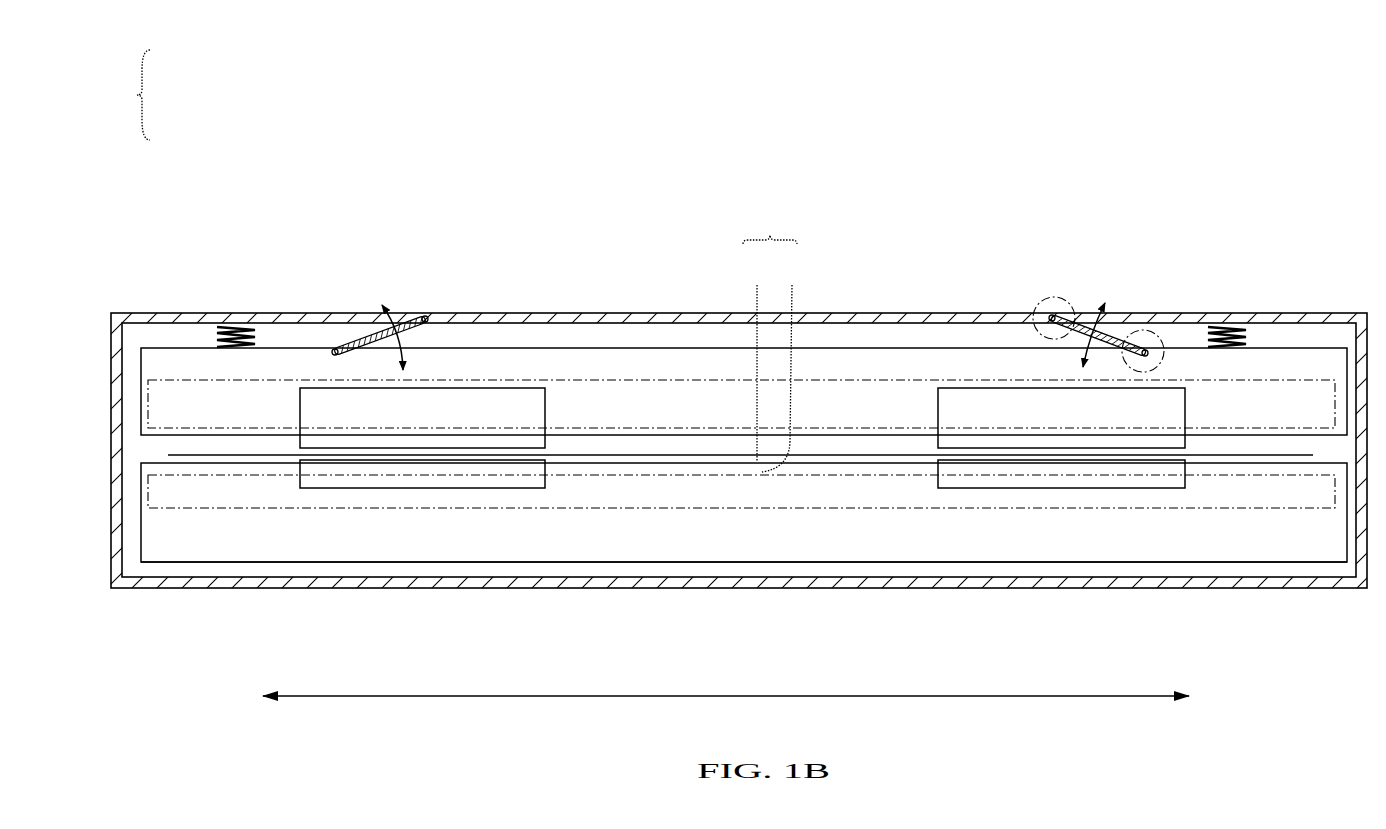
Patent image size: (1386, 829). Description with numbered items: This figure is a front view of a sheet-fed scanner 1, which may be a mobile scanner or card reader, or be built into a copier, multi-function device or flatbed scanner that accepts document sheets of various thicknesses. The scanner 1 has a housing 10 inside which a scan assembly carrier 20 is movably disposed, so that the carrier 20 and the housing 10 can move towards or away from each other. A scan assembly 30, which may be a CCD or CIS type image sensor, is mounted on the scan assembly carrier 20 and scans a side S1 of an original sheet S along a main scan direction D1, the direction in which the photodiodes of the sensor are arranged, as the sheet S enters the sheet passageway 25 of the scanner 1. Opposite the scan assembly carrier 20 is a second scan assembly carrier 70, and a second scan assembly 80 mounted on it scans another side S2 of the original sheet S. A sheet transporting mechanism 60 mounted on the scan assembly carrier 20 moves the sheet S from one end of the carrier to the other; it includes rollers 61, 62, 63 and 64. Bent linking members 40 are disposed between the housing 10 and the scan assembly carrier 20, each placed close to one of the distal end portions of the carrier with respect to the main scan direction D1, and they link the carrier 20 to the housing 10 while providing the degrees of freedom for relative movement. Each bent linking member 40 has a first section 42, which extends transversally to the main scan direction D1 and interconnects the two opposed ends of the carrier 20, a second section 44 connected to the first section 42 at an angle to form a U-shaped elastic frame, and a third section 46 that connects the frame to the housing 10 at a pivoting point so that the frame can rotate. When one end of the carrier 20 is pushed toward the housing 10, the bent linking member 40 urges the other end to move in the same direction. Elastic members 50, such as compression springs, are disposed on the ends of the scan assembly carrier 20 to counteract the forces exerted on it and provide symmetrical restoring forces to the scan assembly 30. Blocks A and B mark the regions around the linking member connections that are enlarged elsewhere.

The sheet-fed scanner 1 is at (702, 82).
The housing 10 is at (657, 315).
The scan assembly carrier 20 is at (585, 347).
The sheet passageway 25 is at (820, 455).
The scan assembly 30 is at (207, 380).
The bent linking member 40 is at (373, 328).
The first section 42 is at (333, 350).
The second section 44 is at (1093, 315).
The third section 46 is at (425, 318).
The elastic members 50 is at (239, 330).
The sheet transporting mechanism 60 is at (139, 97).
The roller 61 is at (530, 388).
The roller 62 is at (522, 488).
The roller 63 is at (978, 388).
The roller 64 is at (987, 488).
The second scan assembly carrier 70 is at (243, 562).
The second scan assembly 80 is at (345, 508).
The original sheet S is at (770, 223).
The side of original sheet S1 is at (752, 361).
The another side of original sheet S2 is at (783, 366).
The block A is at (1045, 298).
The block B is at (1163, 332).
The main scan direction D1 is at (801, 699).